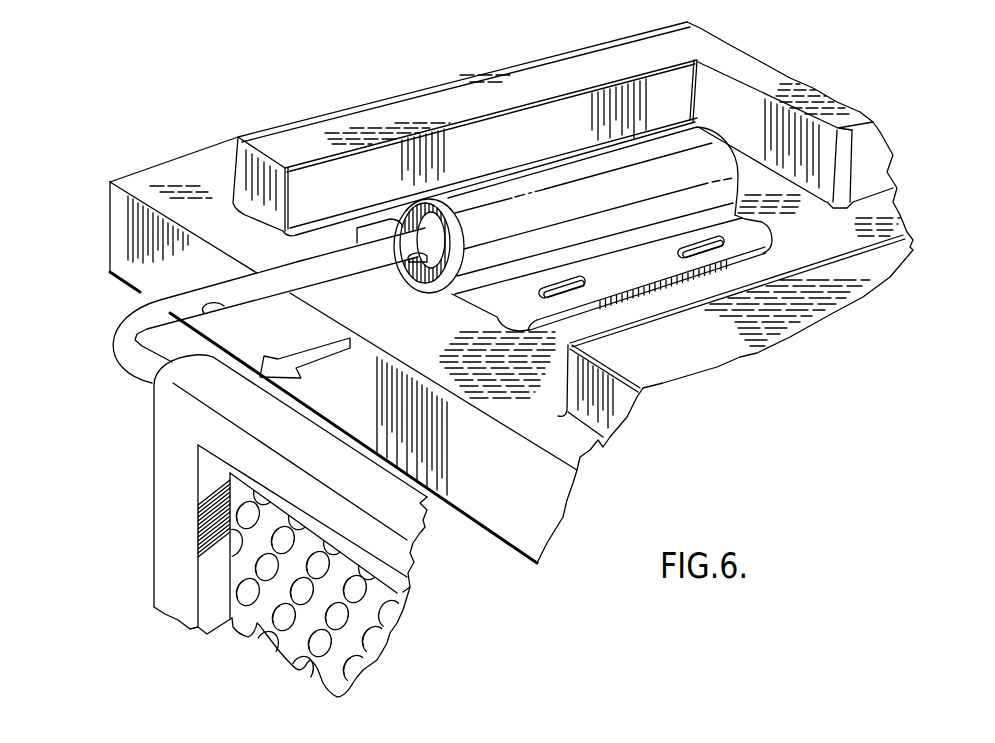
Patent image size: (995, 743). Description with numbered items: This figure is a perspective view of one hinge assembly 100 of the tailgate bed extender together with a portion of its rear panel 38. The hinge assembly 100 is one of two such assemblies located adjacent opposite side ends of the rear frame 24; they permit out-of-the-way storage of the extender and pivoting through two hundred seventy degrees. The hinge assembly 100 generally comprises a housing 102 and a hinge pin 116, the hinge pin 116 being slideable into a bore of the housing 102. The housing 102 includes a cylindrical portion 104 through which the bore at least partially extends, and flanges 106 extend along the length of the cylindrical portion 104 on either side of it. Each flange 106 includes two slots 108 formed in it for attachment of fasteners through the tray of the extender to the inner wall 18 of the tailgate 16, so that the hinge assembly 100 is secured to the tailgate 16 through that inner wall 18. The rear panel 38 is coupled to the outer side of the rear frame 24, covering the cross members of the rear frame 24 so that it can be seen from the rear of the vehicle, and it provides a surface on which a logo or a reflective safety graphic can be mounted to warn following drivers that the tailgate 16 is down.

The tailgate 16 is at (513, 402).
The inner wall 18 is at (577, 446).
The rear frame 24 is at (176, 542).
The rear panel 38 is at (263, 612).
The hinge assembly 100 is at (370, 182).
The housing 102 is at (717, 172).
The cylindrical portion 104 is at (547, 190).
The flange 106 is at (650, 267).
The slot 108 is at (768, 224).
The hinge pin 116 is at (192, 292).